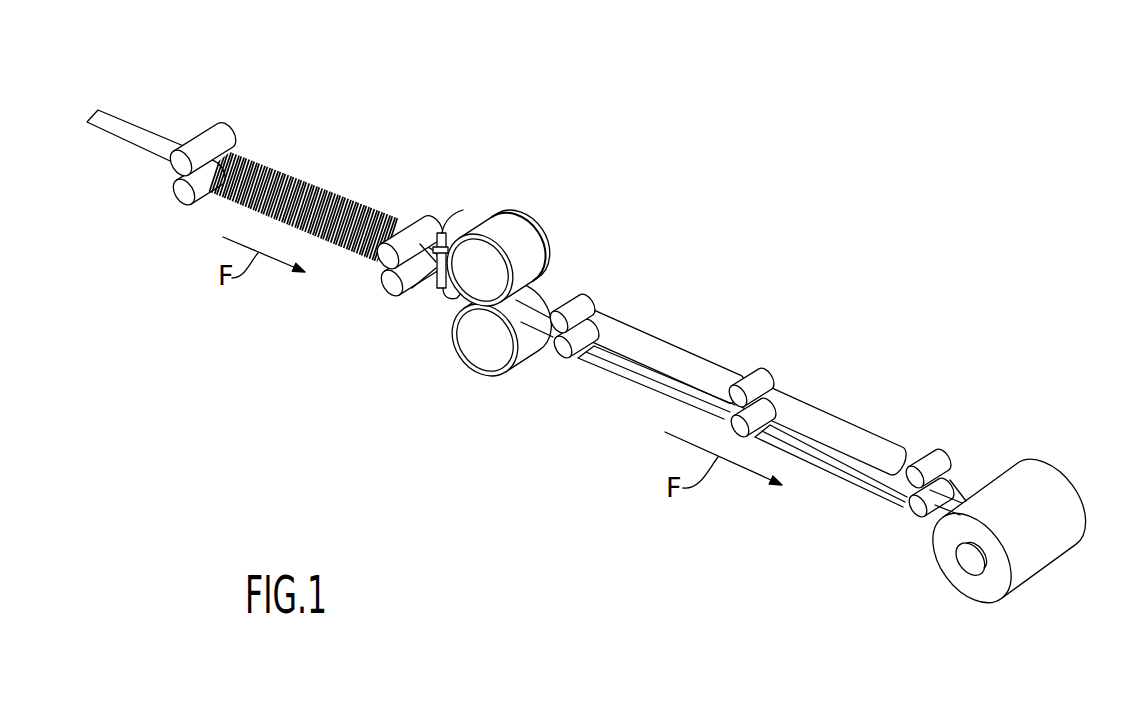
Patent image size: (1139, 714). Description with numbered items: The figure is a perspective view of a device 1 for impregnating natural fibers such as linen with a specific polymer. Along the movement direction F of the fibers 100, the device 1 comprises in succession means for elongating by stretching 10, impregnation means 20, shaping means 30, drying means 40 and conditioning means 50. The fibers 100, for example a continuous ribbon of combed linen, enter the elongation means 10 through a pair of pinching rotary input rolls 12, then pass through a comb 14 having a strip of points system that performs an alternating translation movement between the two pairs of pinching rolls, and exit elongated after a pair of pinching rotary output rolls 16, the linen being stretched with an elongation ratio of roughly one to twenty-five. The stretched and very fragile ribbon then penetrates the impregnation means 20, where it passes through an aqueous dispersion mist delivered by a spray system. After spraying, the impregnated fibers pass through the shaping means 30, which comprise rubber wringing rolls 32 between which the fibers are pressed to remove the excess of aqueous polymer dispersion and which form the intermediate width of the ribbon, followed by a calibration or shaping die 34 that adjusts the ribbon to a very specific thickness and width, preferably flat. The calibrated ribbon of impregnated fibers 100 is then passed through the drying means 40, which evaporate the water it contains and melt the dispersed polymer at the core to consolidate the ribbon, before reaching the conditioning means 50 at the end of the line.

The device 1 is at (604, 349).
The means for elongating by stretching 10 is at (272, 213).
The pinching rotary input rolls 12 is at (172, 172).
The comb 14 is at (343, 203).
The pinching rotary output rolls 16 is at (386, 286).
The impregnation means 20 is at (465, 195).
The shaping means 30 is at (573, 319).
The wringing rolls 32 is at (480, 348).
The calibration or shaping die 34 is at (563, 352).
The drying means 40 is at (771, 356).
The conditioning means 50 is at (1046, 461).
The fibers 100 is at (136, 133).